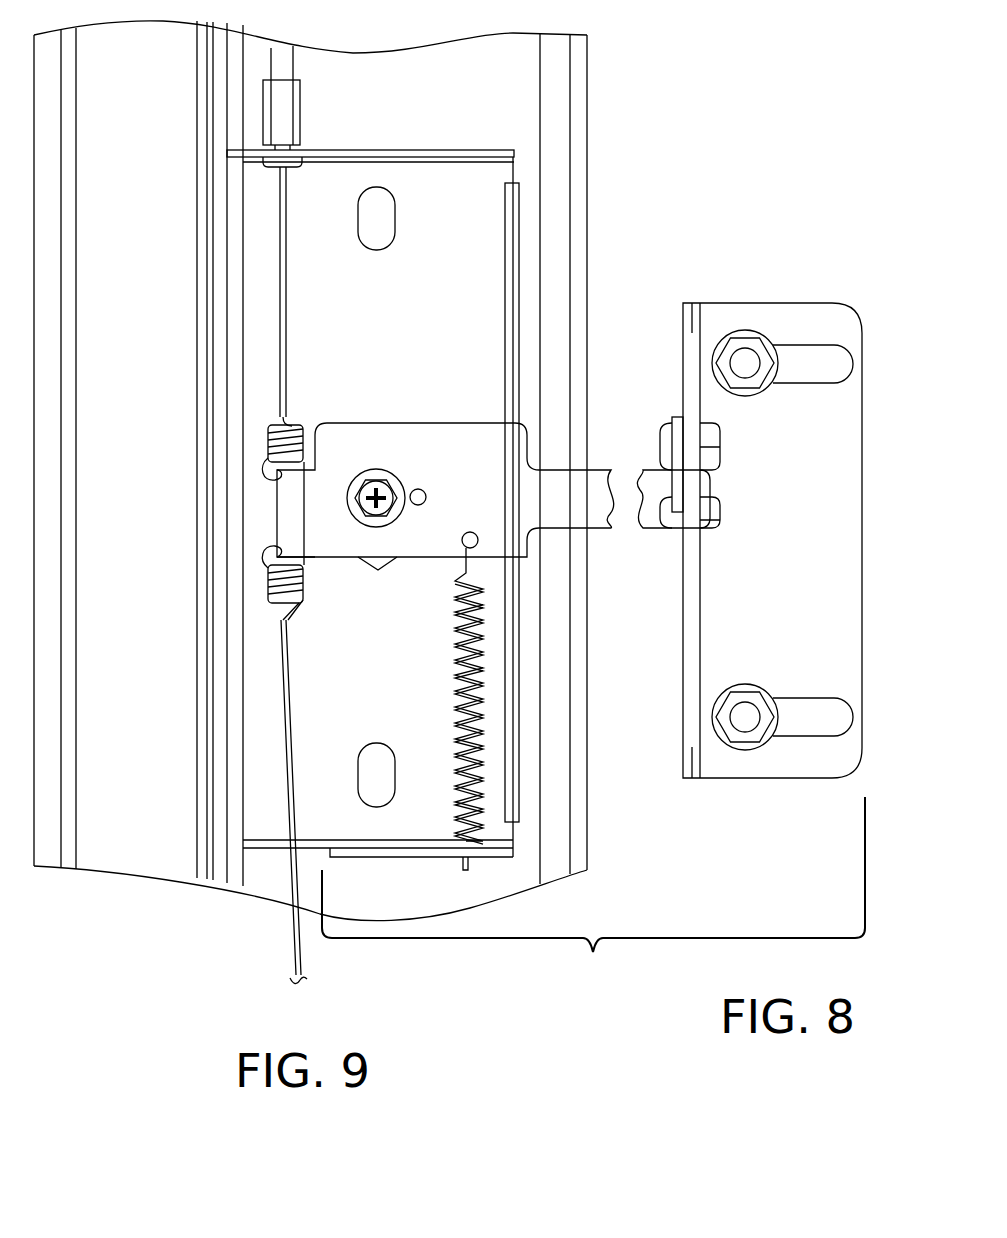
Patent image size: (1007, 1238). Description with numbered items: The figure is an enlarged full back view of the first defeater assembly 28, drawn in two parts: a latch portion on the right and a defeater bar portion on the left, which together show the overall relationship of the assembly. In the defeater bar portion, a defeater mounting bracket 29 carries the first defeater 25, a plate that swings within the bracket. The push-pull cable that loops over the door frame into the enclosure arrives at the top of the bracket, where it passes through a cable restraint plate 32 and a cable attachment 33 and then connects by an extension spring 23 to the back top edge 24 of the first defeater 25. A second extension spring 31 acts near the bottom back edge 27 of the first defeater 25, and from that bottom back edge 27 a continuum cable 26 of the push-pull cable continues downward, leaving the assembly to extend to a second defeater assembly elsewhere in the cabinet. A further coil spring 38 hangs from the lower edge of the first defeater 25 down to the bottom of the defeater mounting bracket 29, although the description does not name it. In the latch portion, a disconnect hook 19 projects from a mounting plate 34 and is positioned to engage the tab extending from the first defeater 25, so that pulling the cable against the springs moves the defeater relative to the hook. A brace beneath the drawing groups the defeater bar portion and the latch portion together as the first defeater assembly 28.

In FIG. 8, the disconnect hook 19 is at (677, 492).
In FIG. 9, the extension spring 23 is at (270, 443).
In FIG. 9, the back top edge 24 is at (319, 414).
In FIG. 9, the first defeater 25 is at (491, 497).
In FIG. 9, the continuum cable 26 is at (290, 707).
In FIG. 9, the bottom back edge 27 is at (322, 572).
In FIG. 8, the first defeater assembly 28 is at (593, 896).
In FIG. 9, the defeater mounting bracket 29 is at (441, 324).
In FIG. 9, the extension spring 31 is at (270, 577).
In FIG. 9, the cable restraint plate 32 is at (446, 150).
In FIG. 9, the cable attachment 33 is at (302, 105).
In FIG. 8, the mounting plate 34 is at (801, 544).
In FIG. 9, the coil spring 38 is at (483, 661).